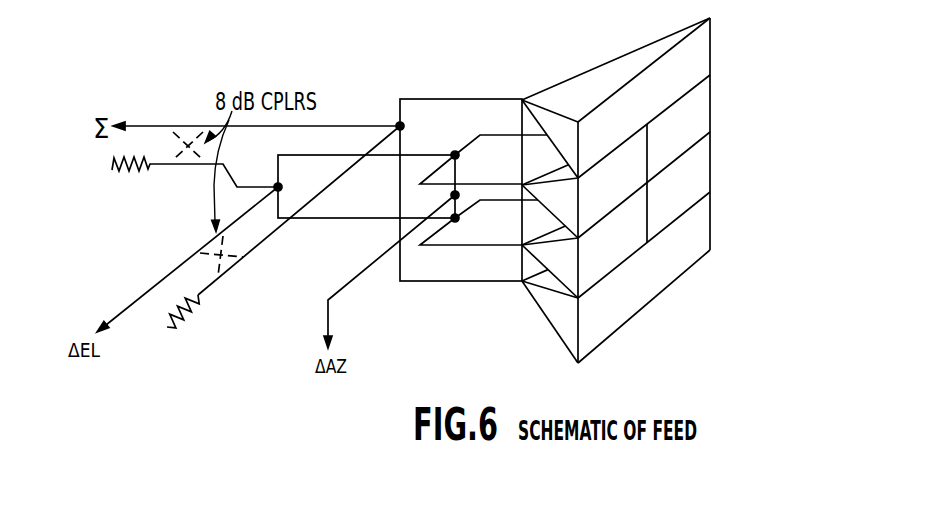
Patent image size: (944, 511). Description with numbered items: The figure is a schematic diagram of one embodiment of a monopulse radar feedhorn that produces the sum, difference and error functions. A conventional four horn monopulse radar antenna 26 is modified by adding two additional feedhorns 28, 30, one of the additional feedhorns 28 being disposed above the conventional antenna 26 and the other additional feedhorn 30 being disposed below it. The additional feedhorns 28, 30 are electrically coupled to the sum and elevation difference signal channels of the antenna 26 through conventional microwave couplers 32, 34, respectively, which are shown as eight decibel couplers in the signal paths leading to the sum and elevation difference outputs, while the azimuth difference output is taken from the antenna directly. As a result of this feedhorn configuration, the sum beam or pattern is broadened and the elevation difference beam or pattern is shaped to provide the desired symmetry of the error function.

The four horn monopulse radar antenna 26 is at (654, 190).
The additional feedhorn 28 is at (703, 56).
The additional feedhorn 30 is at (693, 257).
The microwave coupler 32 is at (176, 134).
The microwave coupler 34 is at (228, 262).